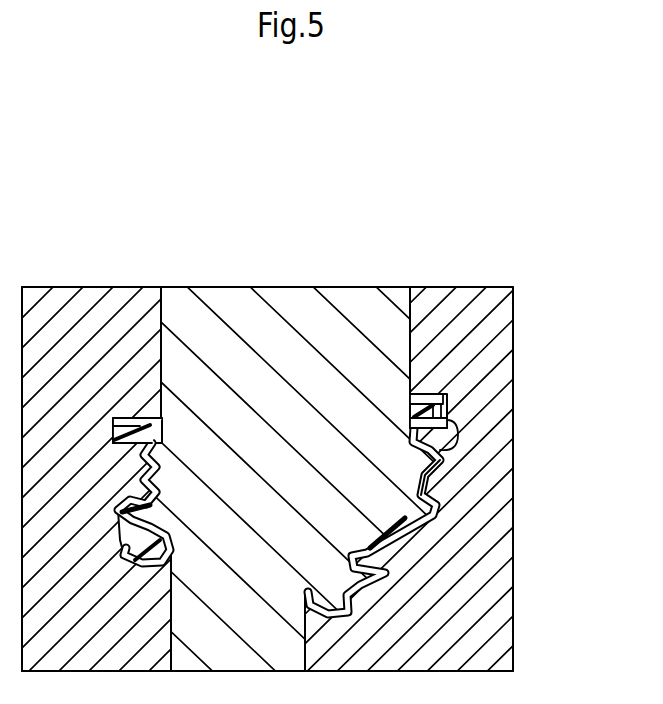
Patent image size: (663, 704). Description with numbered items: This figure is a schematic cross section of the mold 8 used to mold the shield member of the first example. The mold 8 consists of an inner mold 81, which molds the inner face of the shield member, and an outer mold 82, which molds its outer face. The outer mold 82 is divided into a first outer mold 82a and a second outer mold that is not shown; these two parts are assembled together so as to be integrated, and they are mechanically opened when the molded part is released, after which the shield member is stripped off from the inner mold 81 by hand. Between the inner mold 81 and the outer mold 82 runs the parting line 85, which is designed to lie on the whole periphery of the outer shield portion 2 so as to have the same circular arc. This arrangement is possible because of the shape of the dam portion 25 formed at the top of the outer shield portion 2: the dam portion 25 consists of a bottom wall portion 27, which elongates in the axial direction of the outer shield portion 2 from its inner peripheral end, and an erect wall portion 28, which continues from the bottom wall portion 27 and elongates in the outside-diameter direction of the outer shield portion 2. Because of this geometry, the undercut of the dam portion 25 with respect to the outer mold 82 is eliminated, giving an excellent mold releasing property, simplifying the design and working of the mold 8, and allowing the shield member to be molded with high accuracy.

The mold 8 is at (302, 188).
The outer mold 82 is at (80, 303).
The first outer mold 82a is at (465, 300).
The inner mold 81 is at (237, 317).
The parting line 85 is at (174, 313).
The bottom wall portion 27 is at (410, 402).
The dam portion 25 is at (425, 388).
The erect wall portion 28 is at (430, 397).
The outer shield portion 2 is at (468, 430).